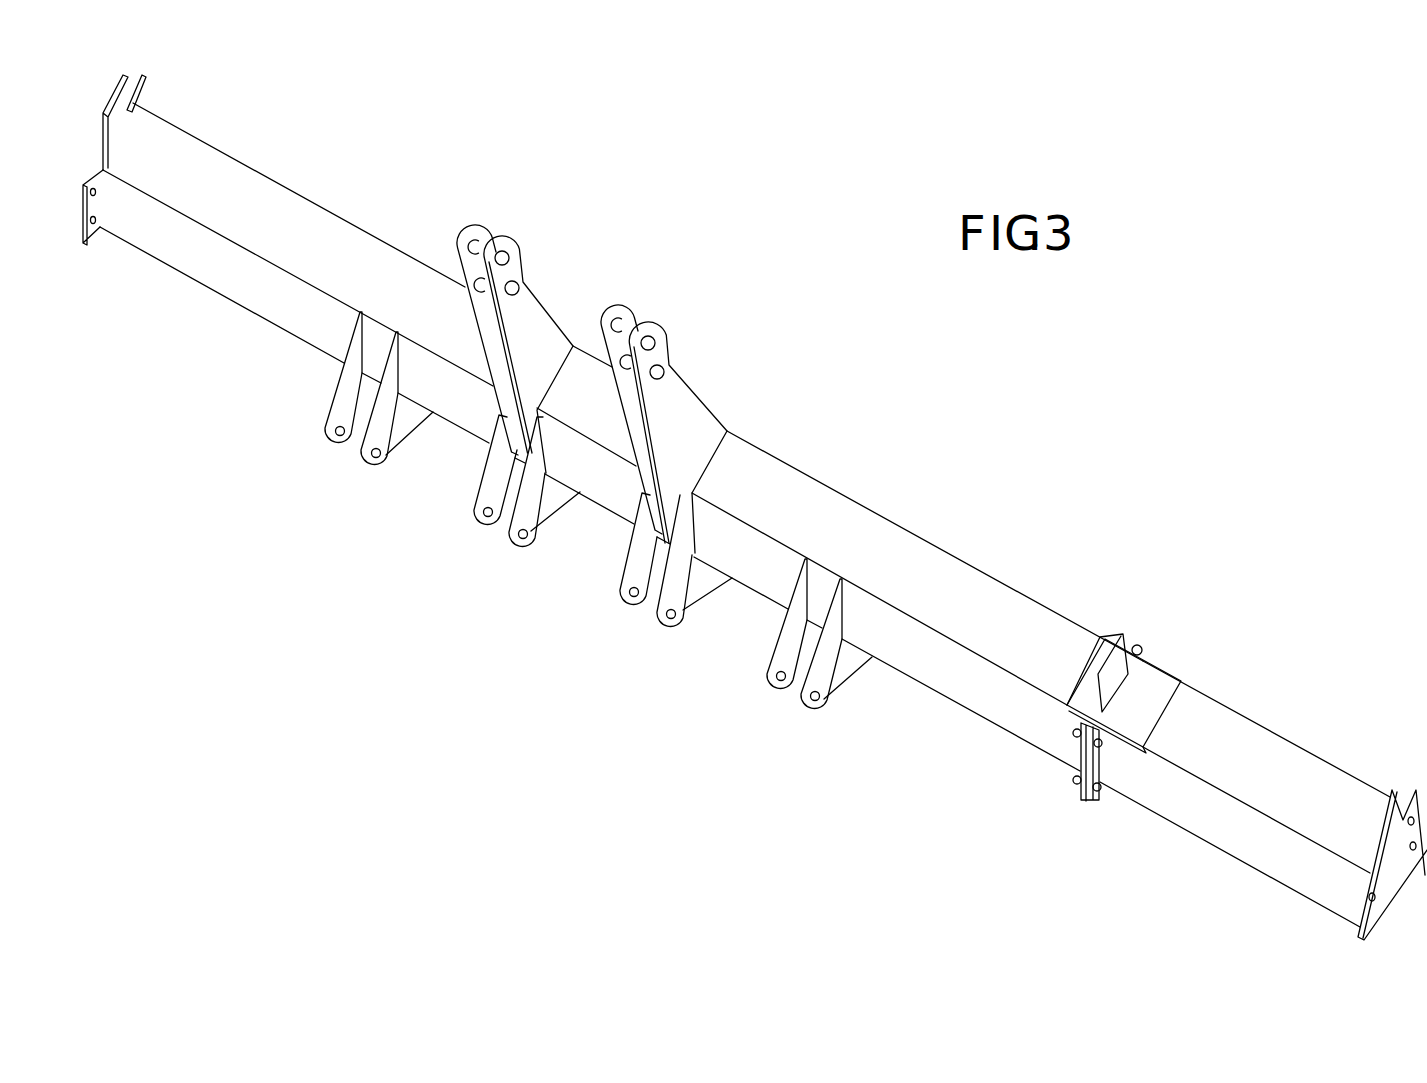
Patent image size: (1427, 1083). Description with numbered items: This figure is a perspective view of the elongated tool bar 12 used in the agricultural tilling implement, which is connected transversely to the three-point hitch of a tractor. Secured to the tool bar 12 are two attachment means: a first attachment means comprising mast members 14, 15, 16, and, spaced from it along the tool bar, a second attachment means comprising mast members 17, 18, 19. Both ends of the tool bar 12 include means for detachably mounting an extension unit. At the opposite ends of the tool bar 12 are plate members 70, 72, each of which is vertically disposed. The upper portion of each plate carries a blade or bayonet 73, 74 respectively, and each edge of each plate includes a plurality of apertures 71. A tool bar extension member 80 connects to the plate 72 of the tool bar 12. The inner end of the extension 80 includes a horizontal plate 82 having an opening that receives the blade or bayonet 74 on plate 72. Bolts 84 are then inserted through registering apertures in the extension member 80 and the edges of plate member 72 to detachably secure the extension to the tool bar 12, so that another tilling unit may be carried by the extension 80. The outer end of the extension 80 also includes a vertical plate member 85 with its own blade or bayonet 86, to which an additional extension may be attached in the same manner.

The tool bar 12 is at (290, 186).
The mast member 14 is at (514, 246).
The mast member 15 is at (371, 458).
The mast member 16 is at (658, 620).
The mast member 17 is at (664, 350).
The mast member 18 is at (510, 536).
The mast member 19 is at (806, 703).
The plate member 70 is at (89, 155).
The apertures 71 is at (121, 270).
The plate member 72 is at (1146, 628).
The blade or bayonet 73 is at (112, 92).
The blade or bayonet 74 is at (1122, 632).
The tool bar extension member 80 is at (1288, 729).
The horizontal plate 82 is at (1165, 674).
The bolts 84 is at (1072, 780).
The vertical plate member 85 is at (1405, 838).
The blade or bayonet 86 is at (1393, 789).